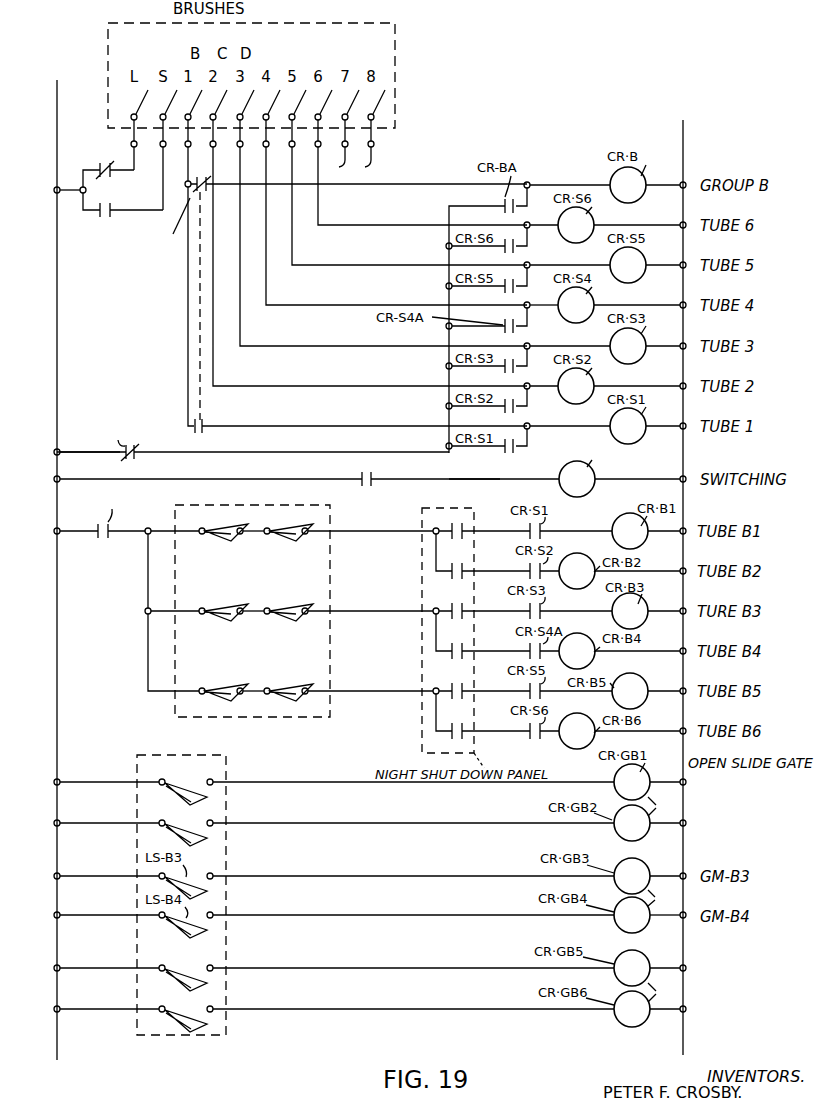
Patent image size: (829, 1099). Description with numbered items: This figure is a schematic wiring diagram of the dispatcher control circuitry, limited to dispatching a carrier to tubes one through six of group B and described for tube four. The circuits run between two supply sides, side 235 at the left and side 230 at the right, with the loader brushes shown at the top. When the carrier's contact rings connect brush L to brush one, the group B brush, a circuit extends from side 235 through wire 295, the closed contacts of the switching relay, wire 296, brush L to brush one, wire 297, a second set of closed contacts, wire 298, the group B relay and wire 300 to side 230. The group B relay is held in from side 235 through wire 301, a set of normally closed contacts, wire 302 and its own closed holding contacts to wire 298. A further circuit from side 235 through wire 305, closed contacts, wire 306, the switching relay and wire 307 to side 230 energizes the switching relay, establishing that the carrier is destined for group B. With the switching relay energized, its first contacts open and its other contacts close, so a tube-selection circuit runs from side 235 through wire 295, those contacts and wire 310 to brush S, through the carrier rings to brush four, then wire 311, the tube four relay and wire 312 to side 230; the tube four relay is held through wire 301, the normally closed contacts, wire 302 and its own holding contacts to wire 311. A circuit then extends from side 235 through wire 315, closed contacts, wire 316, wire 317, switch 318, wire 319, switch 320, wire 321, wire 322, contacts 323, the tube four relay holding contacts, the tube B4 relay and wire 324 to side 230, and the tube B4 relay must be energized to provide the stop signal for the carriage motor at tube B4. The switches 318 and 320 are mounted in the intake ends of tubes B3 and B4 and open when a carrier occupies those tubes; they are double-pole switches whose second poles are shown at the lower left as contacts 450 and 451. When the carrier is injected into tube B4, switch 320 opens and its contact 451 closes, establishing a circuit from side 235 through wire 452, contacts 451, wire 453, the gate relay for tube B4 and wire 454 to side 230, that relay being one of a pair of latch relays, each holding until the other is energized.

The side 230 is at (683, 160).
The side 235 is at (57, 132).
The wire 295 is at (62, 193).
The wire 296 is at (137, 167).
The wire 297 is at (187, 289).
The wire 298 is at (401, 185).
The wire 300 is at (662, 188).
The wire 301 is at (83, 451).
The wire 302 is at (326, 453).
The wire 305 is at (214, 480).
The wire 306 is at (470, 481).
The wire 307 is at (633, 481).
The wire 310 is at (160, 213).
The wire 311 is at (284, 306).
The wire 312 is at (610, 306).
The wire 315 is at (73, 533).
The wire 316 is at (115, 533).
The wire 317 is at (165, 613).
The switch 318 is at (209, 616).
The wire 319 is at (252, 608).
The switch 320 is at (280, 615).
The wire 321 is at (350, 608).
The wire 322 is at (436, 630).
The contacts 323 is at (464, 650).
The wire 324 is at (665, 652).
The second pole of switch 318 450 is at (201, 887).
The second pole of switch 320 451 is at (201, 927).
The wire 452 is at (75, 915).
The wire 453 is at (372, 915).
The wire 454 is at (668, 919).